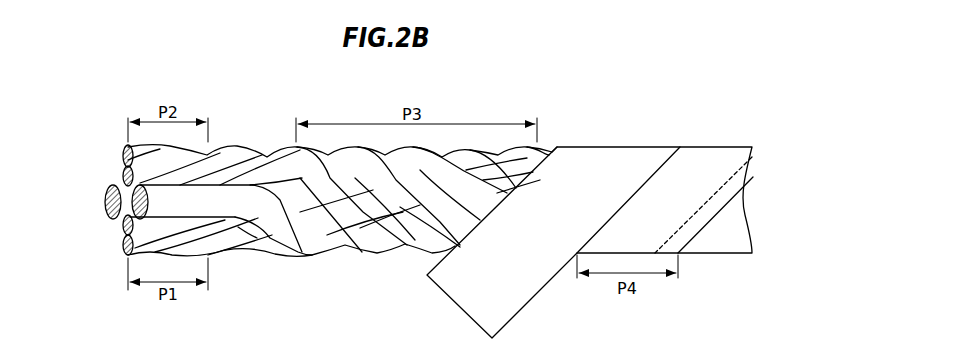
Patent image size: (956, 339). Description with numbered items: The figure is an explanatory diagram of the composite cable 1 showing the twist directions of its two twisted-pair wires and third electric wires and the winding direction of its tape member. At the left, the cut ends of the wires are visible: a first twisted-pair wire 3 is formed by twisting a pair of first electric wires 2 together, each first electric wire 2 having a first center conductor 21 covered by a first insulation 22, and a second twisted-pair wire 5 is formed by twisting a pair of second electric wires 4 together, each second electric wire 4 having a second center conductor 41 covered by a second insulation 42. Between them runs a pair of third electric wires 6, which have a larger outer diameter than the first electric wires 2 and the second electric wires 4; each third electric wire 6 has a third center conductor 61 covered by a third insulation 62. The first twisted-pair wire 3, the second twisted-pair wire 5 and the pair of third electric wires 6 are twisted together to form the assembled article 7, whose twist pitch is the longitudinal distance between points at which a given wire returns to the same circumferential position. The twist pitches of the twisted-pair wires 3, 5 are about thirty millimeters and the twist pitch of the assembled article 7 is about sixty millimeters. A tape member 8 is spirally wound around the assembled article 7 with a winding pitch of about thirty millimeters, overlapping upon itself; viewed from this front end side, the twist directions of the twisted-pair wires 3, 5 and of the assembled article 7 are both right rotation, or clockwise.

The composite cable 1 is at (705, 130).
The first electric wire 2 is at (217, 228).
The first twisted-pair wire 3 is at (261, 246).
The second electric wire 4 is at (227, 166).
The second twisted-pair wire 5 is at (257, 148).
The third electric wire 6 is at (346, 197).
The assembled article 7 is at (113, 120).
The tape member 8 is at (733, 247).
The first center conductor 21 is at (125, 246).
The first insulation 22 is at (130, 242).
The second center conductor 41 is at (125, 157).
The second insulation 42 is at (127, 149).
The third center conductor 61 is at (104, 205).
The third insulation 62 is at (104, 195).